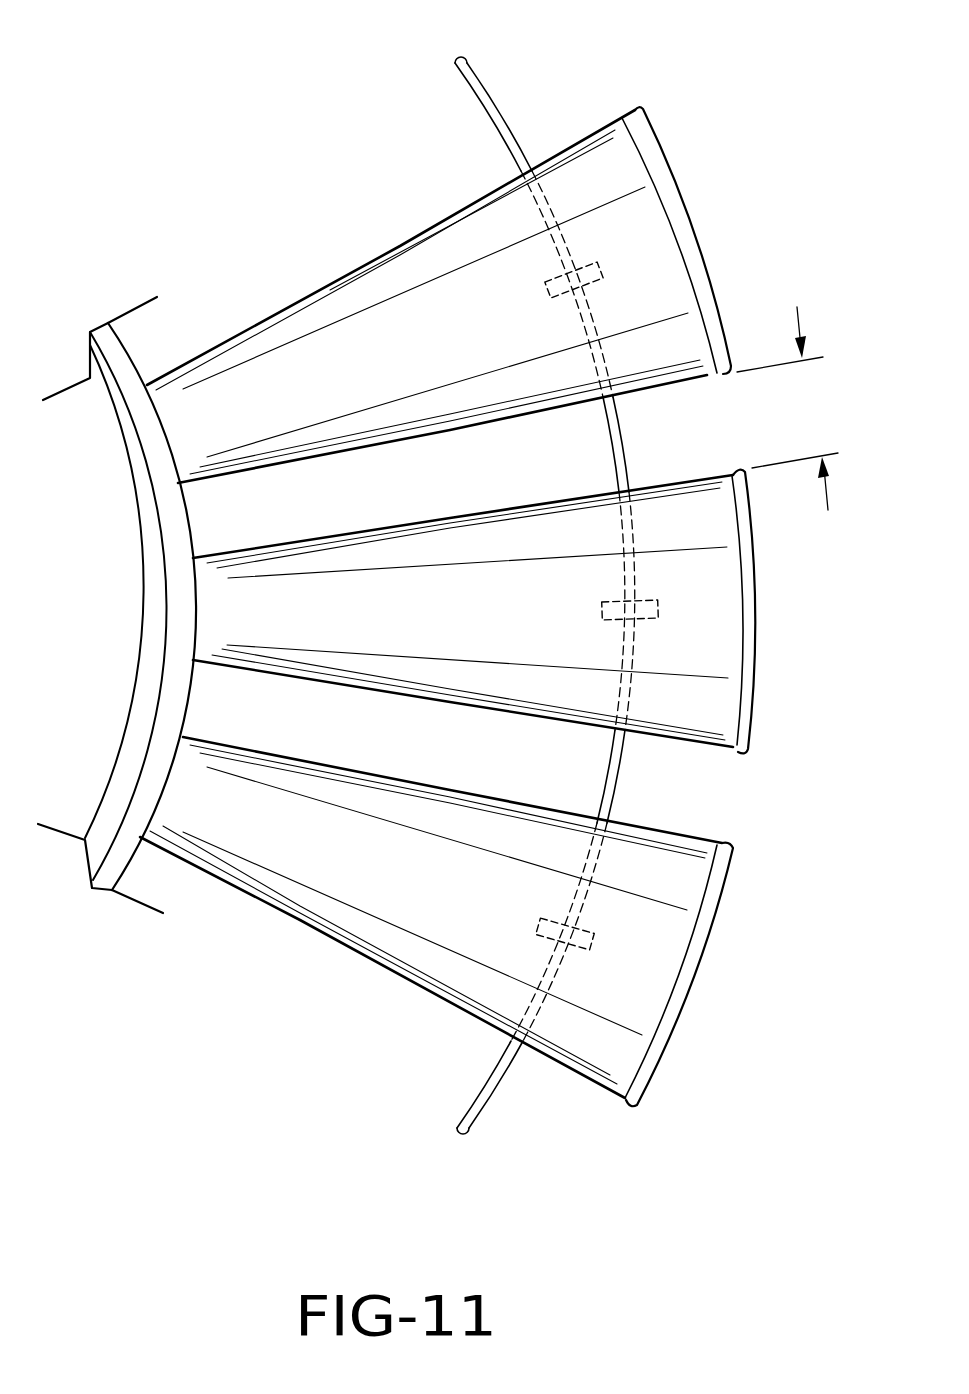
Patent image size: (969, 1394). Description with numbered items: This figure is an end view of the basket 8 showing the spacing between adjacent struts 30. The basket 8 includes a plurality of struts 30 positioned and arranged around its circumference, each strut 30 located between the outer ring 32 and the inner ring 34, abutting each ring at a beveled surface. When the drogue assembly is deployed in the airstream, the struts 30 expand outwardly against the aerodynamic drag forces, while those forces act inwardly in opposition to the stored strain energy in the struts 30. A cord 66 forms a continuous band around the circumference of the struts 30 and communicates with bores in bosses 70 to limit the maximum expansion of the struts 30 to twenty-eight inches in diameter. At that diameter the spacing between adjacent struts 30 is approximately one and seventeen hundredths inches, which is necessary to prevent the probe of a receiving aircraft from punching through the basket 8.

The basket 8 is at (658, 133).
The strut 30 is at (640, 204).
The outer ring 32 is at (180, 673).
The inner ring 34 is at (153, 565).
The cord 66 is at (463, 62).
The boss 70 is at (593, 280).